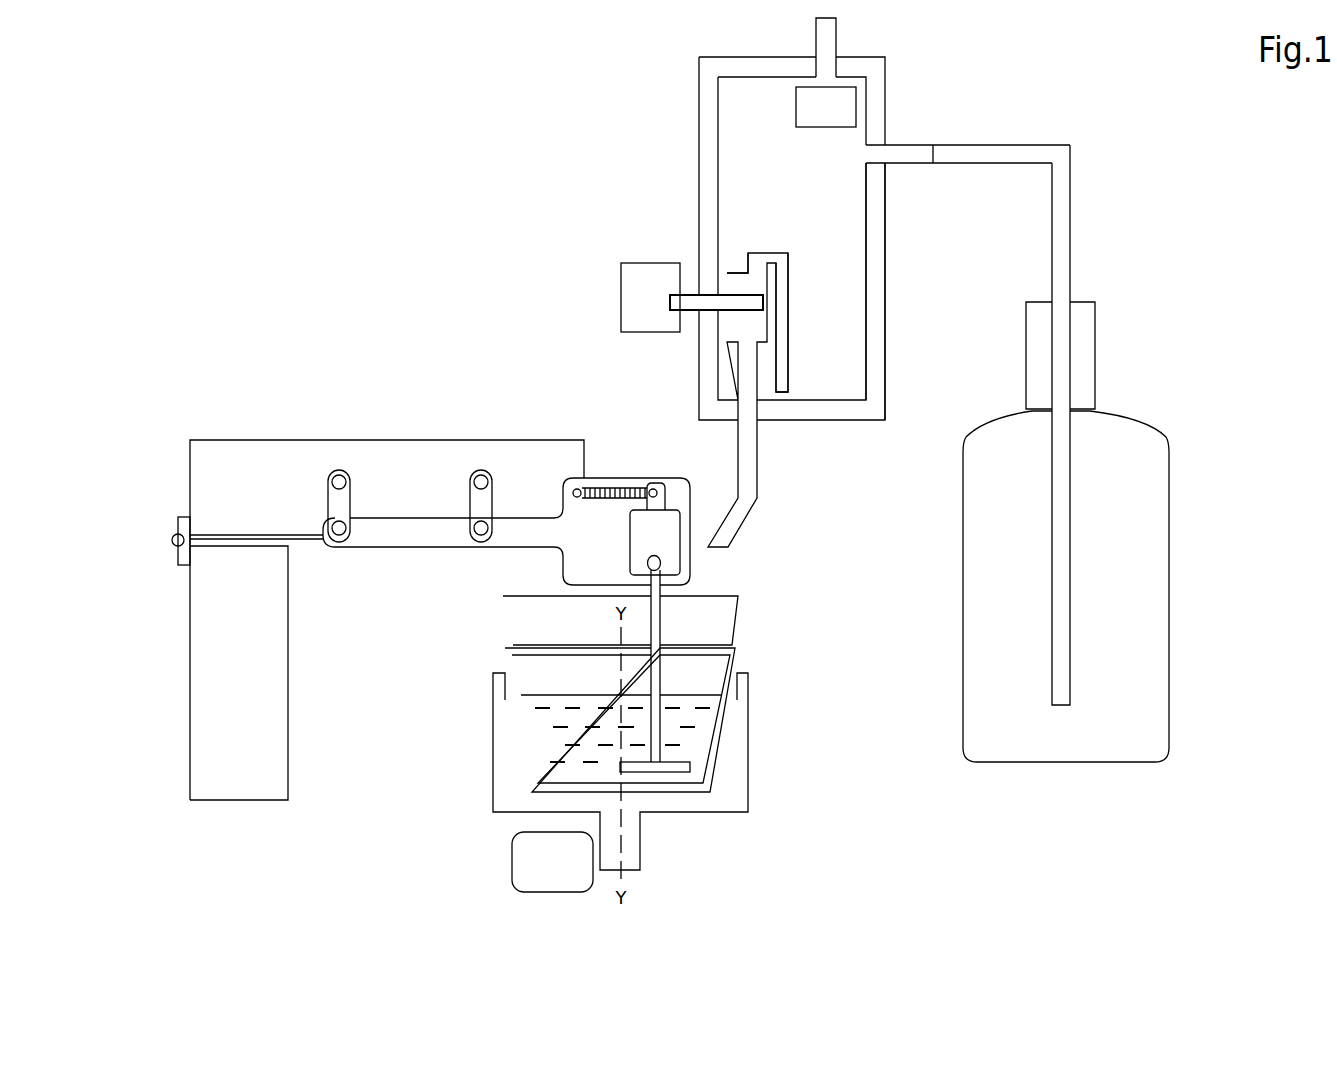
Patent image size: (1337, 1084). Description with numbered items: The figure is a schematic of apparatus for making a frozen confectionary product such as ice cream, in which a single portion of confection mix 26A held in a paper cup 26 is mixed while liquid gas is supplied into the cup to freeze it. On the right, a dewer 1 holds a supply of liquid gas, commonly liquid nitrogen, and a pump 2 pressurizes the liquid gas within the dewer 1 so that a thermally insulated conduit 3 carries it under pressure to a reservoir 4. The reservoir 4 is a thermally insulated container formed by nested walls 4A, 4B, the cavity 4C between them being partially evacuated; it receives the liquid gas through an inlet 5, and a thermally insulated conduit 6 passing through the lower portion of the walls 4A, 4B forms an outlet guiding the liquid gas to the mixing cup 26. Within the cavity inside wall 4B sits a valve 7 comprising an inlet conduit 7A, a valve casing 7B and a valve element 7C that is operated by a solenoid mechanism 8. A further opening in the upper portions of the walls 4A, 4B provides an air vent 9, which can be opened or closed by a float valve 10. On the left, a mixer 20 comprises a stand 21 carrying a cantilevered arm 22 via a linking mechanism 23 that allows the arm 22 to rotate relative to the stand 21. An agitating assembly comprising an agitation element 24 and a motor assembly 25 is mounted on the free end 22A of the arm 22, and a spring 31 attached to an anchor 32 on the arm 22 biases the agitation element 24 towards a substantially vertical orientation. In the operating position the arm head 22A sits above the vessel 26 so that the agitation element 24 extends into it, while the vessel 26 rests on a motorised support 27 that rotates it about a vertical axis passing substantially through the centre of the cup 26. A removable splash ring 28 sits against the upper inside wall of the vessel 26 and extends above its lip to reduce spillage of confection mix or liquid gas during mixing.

The dewer 1 is at (1170, 562).
The pump 2 is at (1095, 372).
The thermally insulated conduit 3 is at (1072, 205).
The reservoir 4 is at (699, 90).
The outer wall 4A is at (887, 222).
The inner wall 4B is at (866, 243).
The cavity 4C is at (876, 270).
The inlet 5 is at (905, 147).
The thermally insulated conduit 6 is at (758, 470).
The valve 7 is at (757, 285).
The inlet conduit 7A is at (790, 335).
The valve casing 7B is at (737, 272).
The valve element 7C is at (740, 312).
The solenoid mechanism 8 is at (621, 300).
The air vent 9 is at (837, 37).
The float valve 10 is at (795, 127).
The mixer 20 is at (261, 673).
The stand 21 is at (195, 437).
The cantilevered arm 22 is at (410, 548).
The free end 22A is at (692, 550).
The linking mechanism 23 is at (480, 478).
The agitation element 24 is at (709, 671).
The motor assembly 25 is at (672, 566).
The paper cup 26 is at (505, 653).
The confection mix 26A is at (573, 720).
The motorised support 27 is at (742, 780).
The splash ring 28 is at (735, 612).
The spring 31 is at (625, 488).
The anchor 32 is at (580, 487).